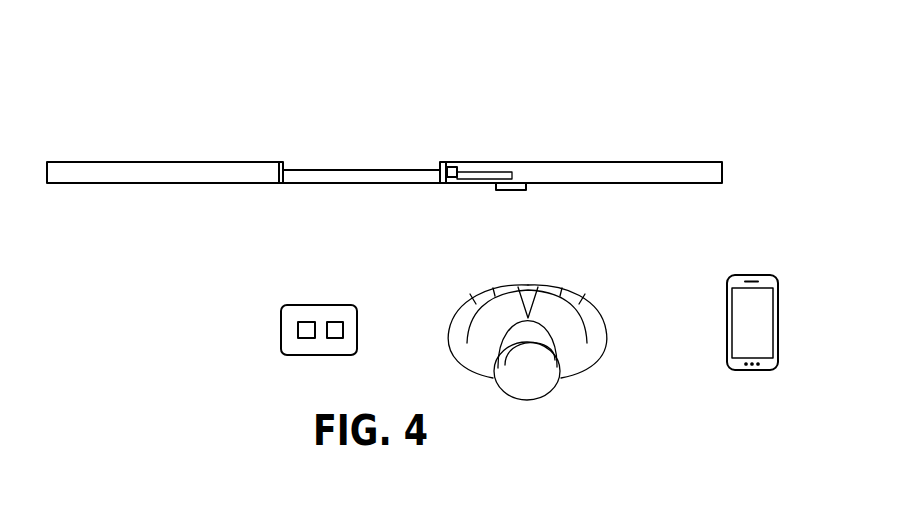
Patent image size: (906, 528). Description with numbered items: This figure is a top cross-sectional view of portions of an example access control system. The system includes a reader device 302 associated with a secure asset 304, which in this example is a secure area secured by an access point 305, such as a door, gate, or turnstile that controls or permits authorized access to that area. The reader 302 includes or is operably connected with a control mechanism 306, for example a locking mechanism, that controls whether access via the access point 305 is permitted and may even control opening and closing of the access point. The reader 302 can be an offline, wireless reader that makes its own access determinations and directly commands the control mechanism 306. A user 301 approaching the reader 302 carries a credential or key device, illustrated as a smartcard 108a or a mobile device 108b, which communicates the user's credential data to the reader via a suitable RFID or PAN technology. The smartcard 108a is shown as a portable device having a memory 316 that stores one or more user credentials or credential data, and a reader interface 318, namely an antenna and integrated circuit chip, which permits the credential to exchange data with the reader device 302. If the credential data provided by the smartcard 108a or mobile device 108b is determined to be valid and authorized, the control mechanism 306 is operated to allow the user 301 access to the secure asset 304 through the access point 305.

The secure asset 304 is at (345, 56).
The access point 305 is at (368, 182).
The control mechanism 306 is at (450, 163).
The reader device 302 is at (518, 191).
The user 301 is at (583, 300).
The smartcard 108a is at (305, 337).
The memory 316 is at (308, 338).
The reader interface 318 is at (341, 324).
The mobile device 108b is at (727, 325).